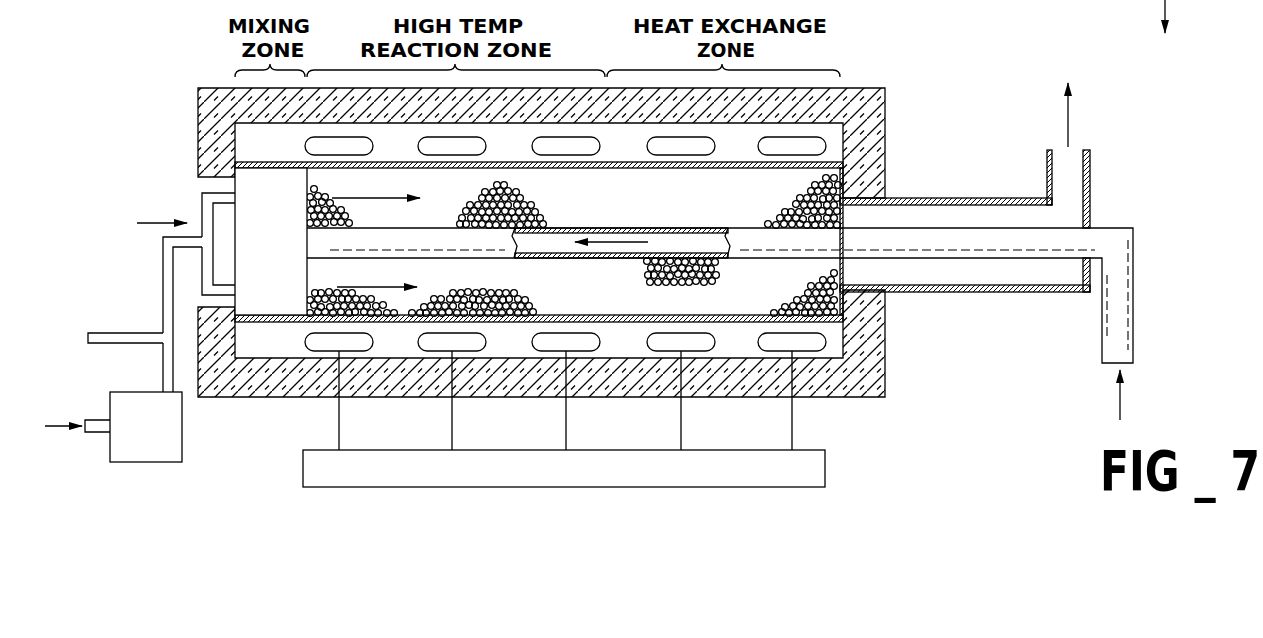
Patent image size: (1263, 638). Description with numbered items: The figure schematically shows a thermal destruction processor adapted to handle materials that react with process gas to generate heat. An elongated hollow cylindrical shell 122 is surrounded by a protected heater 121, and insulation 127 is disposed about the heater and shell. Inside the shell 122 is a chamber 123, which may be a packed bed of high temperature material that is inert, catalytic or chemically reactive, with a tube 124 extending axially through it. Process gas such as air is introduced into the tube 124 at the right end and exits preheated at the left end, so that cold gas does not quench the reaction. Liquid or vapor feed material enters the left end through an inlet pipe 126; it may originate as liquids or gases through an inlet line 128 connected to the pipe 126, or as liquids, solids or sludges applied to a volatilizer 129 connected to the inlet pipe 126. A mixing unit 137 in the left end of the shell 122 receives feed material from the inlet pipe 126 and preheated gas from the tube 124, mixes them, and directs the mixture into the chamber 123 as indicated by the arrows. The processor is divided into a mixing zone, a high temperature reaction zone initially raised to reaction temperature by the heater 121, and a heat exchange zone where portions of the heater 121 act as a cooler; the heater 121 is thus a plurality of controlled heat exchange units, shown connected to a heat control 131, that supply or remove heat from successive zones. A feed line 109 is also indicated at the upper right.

The feed line 109 is at (1115, 16).
The heater 121 is at (703, 156).
The shell 122 is at (563, 313).
The chamber 123 is at (596, 207).
The tube 124 is at (638, 226).
The inlet pipe 126 is at (163, 232).
The insulation 127 is at (883, 347).
The inlet line 128 is at (118, 345).
The volatilizer 129 is at (162, 437).
The heat control 131 is at (827, 467).
The mixing unit 137 is at (307, 266).